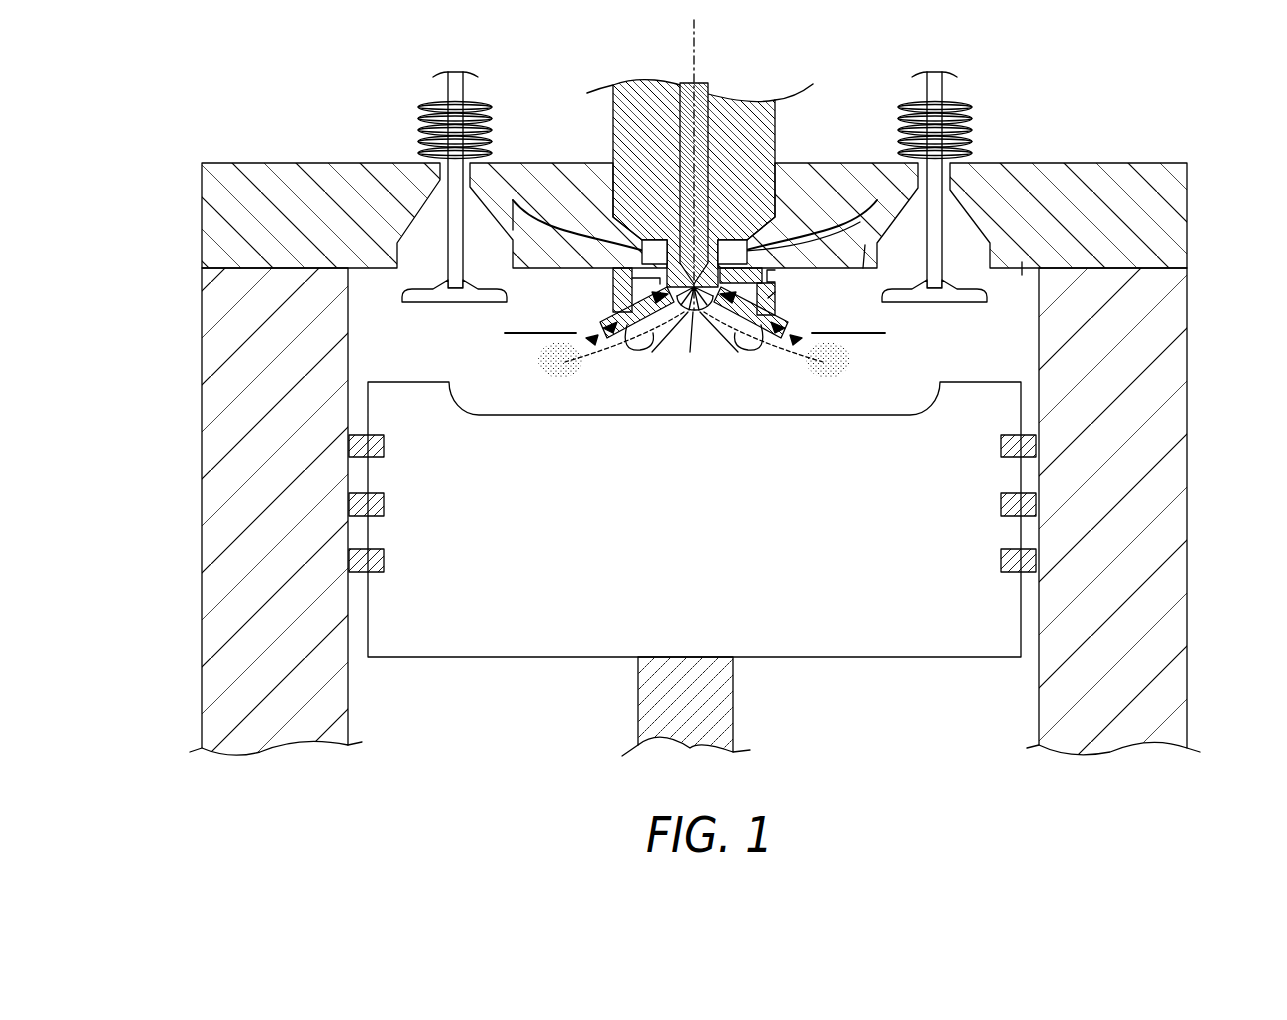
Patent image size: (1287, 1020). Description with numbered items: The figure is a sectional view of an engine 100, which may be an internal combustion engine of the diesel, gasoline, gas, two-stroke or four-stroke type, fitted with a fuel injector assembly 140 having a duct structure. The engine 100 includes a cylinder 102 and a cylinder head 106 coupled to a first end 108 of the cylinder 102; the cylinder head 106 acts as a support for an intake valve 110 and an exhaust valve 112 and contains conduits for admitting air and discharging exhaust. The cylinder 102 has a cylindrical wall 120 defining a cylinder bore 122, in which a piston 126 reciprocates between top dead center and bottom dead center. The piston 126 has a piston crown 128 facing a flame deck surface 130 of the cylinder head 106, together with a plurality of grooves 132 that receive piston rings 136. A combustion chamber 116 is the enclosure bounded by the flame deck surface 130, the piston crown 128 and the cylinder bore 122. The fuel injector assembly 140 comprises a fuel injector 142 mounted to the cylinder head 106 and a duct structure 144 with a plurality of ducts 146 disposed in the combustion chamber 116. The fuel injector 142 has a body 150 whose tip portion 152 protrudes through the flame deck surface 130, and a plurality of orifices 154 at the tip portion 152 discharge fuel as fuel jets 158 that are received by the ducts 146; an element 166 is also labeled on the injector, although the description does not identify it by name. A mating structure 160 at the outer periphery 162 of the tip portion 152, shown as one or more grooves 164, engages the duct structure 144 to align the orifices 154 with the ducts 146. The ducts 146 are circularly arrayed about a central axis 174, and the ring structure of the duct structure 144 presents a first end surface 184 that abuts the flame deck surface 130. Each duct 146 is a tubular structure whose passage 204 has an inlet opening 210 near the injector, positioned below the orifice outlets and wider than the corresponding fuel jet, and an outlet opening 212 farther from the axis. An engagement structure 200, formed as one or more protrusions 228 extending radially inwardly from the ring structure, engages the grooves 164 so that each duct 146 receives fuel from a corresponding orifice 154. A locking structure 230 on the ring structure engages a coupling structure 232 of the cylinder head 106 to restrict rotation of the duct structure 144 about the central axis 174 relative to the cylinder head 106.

The engine 100 is at (170, 145).
The cylinder 102 is at (202, 316).
The cylinder head 106 is at (277, 163).
The first end 108 is at (1187, 272).
The intake valve 110 is at (448, 90).
The exhaust valve 112 is at (942, 90).
The combustion chamber 116 is at (980, 349).
The cylindrical wall 120 is at (267, 638).
The cylinder bore 122 is at (348, 690).
The piston 126 is at (1021, 627).
The piston crown 128 is at (678, 505).
The flame deck surface 130 is at (1022, 275).
The grooves 132 is at (350, 549).
The piston rings 136 is at (1036, 559).
The fuel injector assembly 140 is at (688, 165).
The fuel injector 142 is at (610, 118).
The duct structure 144 is at (703, 327).
The ducts 146 is at (640, 355).
The body 150 is at (757, 108).
The tip portion 152 is at (613, 277).
The orifices 154 is at (692, 345).
The fuel jets 158 is at (545, 365).
The mating structure 160 is at (790, 225).
The outer periphery 162 is at (623, 220).
The grooves 164 is at (790, 240).
The injector needle 166 is at (697, 70).
The central axis 174 is at (697, 35).
The first end surface 184 is at (513, 200).
The engagement structure 200 is at (775, 305).
The passage 204 is at (583, 331).
The inlet opening 210 is at (660, 385).
The outlet opening 212 is at (566, 374).
The protrusions 228 is at (865, 245).
The locking structure 230 is at (770, 282).
The coupling structure 232 is at (775, 298).